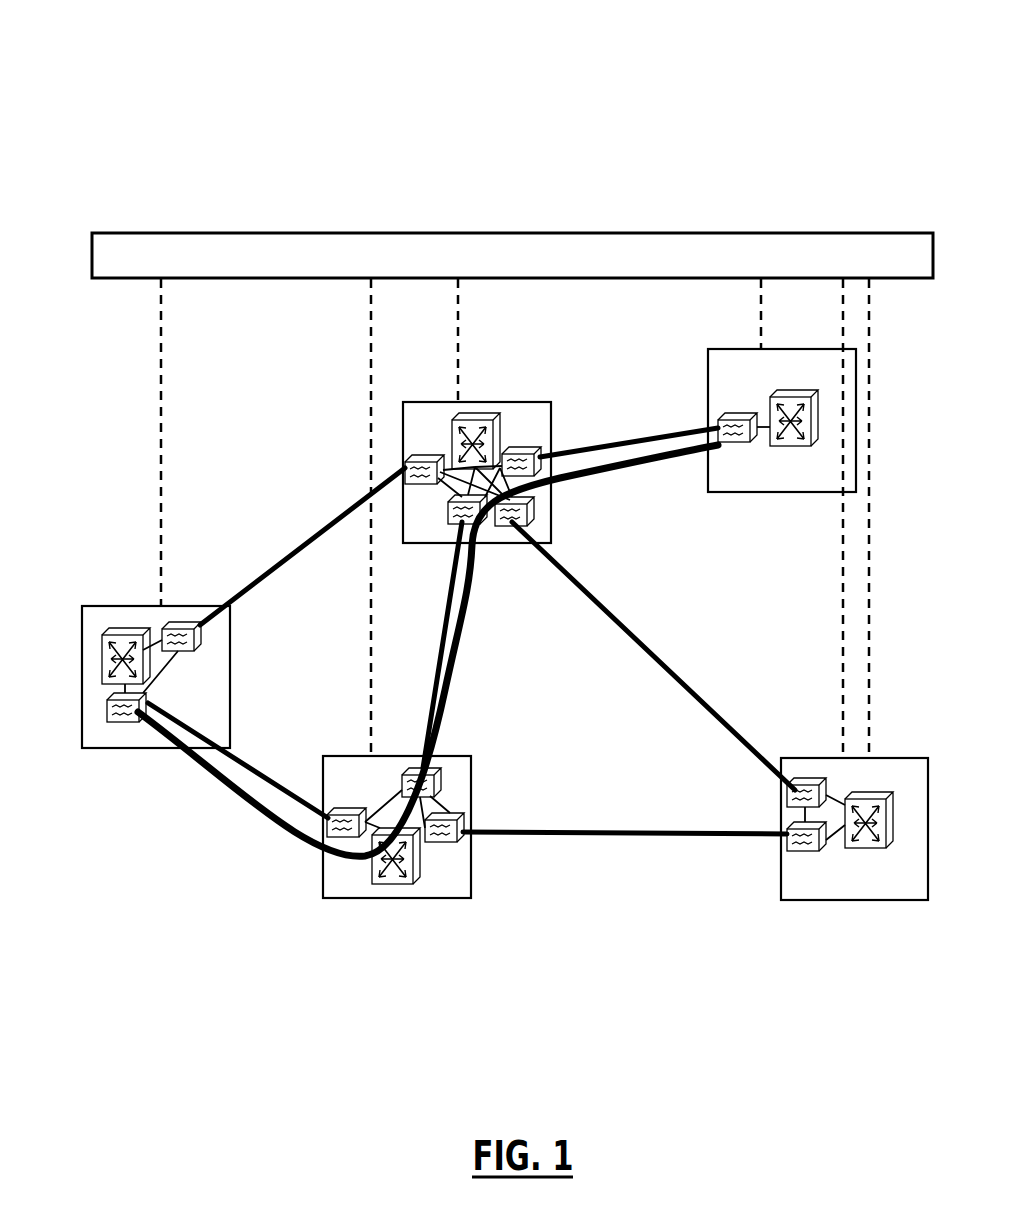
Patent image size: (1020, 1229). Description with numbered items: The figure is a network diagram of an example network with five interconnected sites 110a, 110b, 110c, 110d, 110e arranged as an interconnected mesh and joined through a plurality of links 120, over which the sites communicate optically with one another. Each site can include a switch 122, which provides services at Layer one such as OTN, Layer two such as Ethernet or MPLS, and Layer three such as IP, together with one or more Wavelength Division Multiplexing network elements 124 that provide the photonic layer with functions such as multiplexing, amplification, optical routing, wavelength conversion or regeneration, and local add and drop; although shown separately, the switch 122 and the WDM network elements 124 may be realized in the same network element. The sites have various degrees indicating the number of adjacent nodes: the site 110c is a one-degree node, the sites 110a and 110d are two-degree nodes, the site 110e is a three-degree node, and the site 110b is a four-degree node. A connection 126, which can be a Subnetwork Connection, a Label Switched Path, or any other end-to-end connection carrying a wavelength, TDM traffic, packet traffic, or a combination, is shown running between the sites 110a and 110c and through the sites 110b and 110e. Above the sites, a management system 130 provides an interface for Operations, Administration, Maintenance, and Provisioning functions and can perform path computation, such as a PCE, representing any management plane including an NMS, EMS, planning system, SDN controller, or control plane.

The management system 130 is at (672, 232).
The site 110a is at (82, 715).
The site 110b is at (517, 402).
The site 110c is at (795, 429).
The site 110d is at (828, 900).
The site 110e is at (323, 880).
The links 120 is at (297, 556).
The switch 122 is at (800, 390).
The WDM network element 124 is at (740, 413).
The connection 126 is at (470, 650).